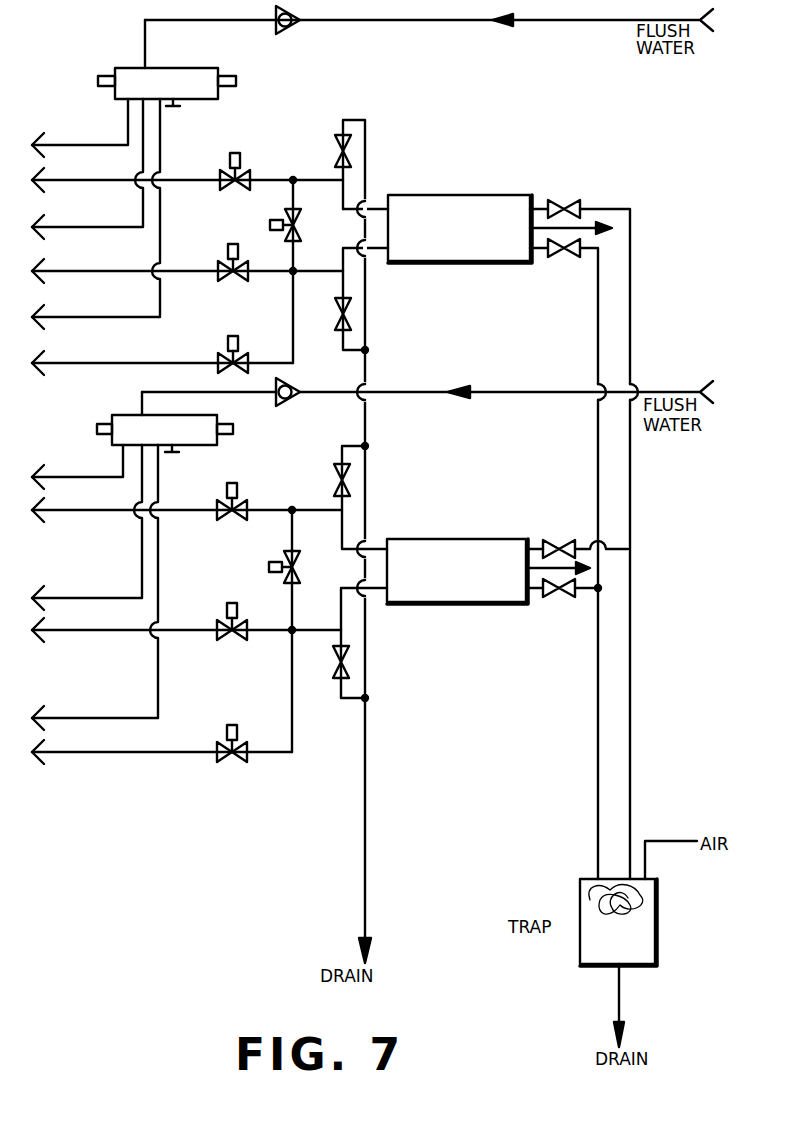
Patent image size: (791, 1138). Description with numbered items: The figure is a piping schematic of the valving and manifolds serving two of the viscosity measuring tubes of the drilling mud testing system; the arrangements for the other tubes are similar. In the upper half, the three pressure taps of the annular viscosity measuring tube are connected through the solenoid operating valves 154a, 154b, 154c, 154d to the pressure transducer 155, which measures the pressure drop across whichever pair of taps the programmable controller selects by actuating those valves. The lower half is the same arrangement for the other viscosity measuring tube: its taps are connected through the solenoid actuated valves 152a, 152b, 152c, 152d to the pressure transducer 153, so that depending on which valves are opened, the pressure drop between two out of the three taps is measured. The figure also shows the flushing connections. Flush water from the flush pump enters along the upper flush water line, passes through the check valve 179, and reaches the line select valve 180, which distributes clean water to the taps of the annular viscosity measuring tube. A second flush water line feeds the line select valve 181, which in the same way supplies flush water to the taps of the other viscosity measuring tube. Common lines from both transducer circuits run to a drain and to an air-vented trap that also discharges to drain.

The check valve 179 is at (296, 30).
The line select valve 180 is at (173, 68).
The line select valve 181 is at (173, 400).
The solenoid operating valve 154a is at (243, 170).
The solenoid operating valve 154b is at (229, 264).
The solenoid operating valve 154c is at (225, 360).
The solenoid operating valve 154d is at (300, 235).
The pressure transducer 155 is at (445, 262).
The solenoid actuated valve 152a is at (243, 503).
The solenoid actuated valve 152b is at (228, 620).
The solenoid actuated valve 152c is at (226, 742).
The solenoid actuated valve 152d is at (300, 572).
The pressure transducer 153 is at (418, 539).